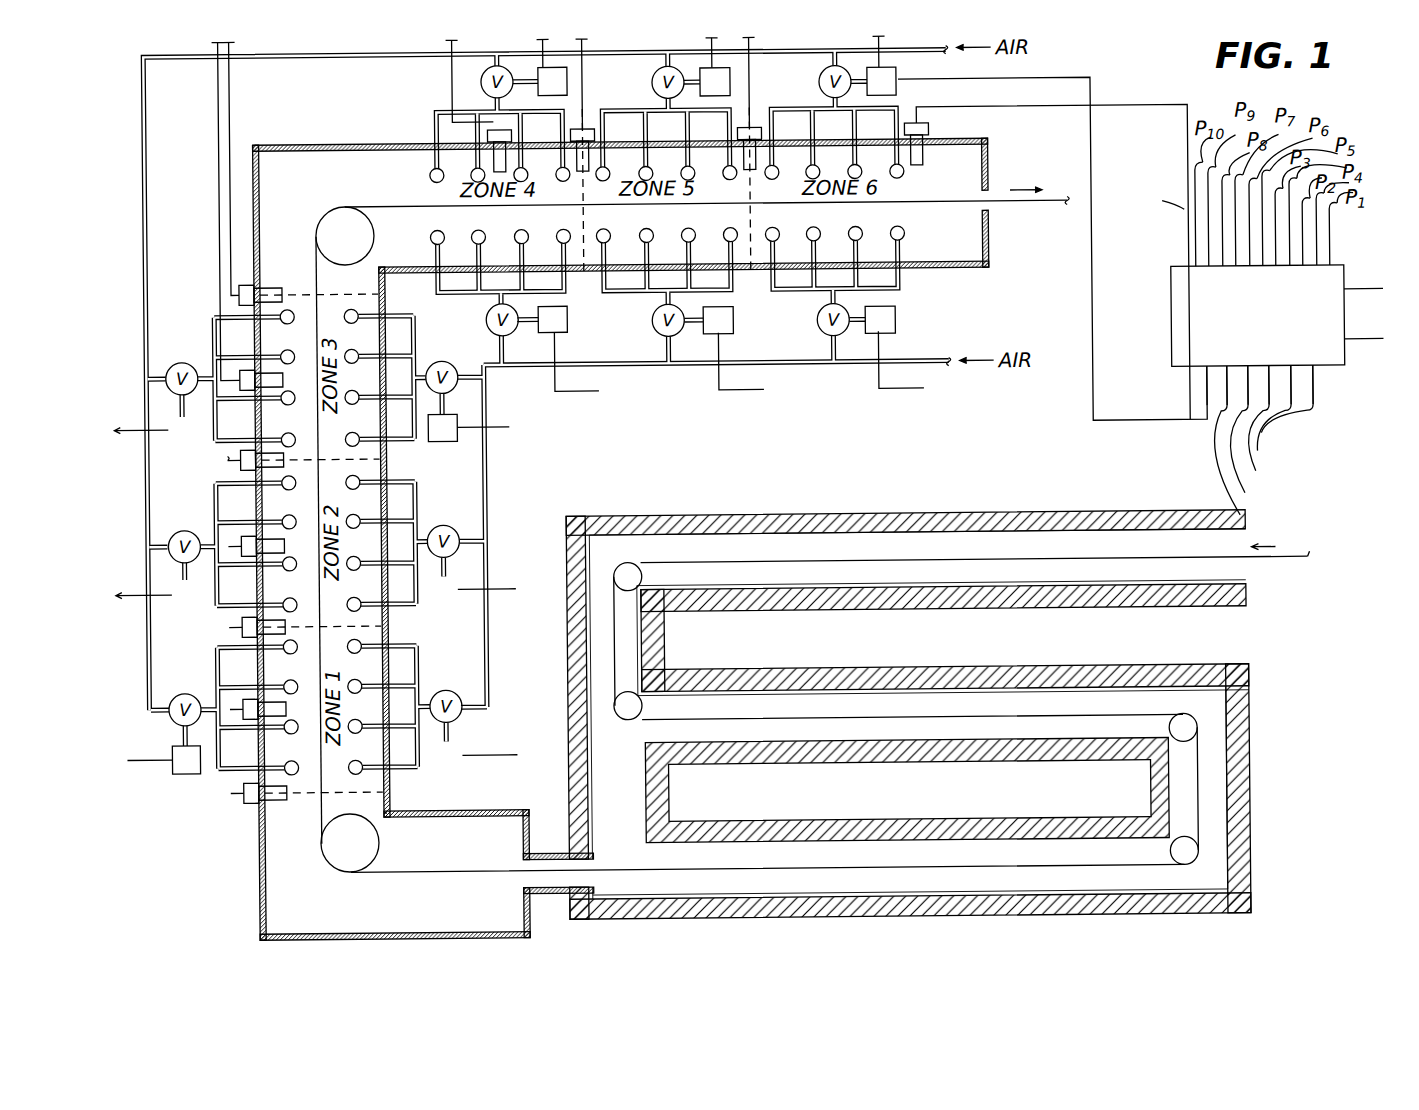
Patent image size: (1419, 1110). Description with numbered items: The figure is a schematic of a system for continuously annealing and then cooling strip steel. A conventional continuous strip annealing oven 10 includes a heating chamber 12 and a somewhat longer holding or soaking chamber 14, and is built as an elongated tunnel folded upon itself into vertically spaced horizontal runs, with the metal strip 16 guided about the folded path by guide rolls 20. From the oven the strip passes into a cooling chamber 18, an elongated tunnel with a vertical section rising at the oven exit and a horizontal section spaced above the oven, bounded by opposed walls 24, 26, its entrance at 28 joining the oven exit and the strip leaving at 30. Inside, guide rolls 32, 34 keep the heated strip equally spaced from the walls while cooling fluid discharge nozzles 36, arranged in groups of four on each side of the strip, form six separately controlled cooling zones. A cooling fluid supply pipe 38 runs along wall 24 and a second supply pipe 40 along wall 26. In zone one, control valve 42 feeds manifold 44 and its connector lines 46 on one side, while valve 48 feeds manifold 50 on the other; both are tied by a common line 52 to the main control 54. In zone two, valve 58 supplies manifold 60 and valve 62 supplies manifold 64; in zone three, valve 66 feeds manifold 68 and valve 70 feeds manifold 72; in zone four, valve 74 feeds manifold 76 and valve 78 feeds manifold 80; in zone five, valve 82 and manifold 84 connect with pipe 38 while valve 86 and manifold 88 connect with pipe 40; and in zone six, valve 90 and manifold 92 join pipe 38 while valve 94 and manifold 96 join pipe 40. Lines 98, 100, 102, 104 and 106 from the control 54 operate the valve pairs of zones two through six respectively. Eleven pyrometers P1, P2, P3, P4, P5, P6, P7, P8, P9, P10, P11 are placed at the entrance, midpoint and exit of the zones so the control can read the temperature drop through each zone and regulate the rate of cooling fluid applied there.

The continuous strip annealing oven 10 is at (900, 515).
The heating chamber 12 is at (1031, 524).
The holding or soaking chamber 14 is at (1095, 685).
The metal strip 16 is at (1272, 562).
The cooling chamber 18 is at (323, 133).
The guide rolls 20 is at (628, 563).
The wall 24 is at (258, 850).
The wall 26 is at (390, 803).
The entrance 28 is at (522, 848).
The belt exit run 30 is at (993, 202).
The guide roll 32 is at (345, 855).
The guide roll 34 is at (338, 214).
The cooling fluid discharge nozzles 36 is at (283, 760).
The cooling fluid supply pipe 38 is at (144, 190).
The second supply pipe 40 is at (714, 368).
The control valve 42 is at (165, 720).
The manifold 44 is at (215, 773).
The connector lines 46 is at (225, 689).
The valve 48 is at (441, 687).
The manifold 50 is at (415, 651).
The common line 52 is at (1338, 409).
The main control 54 is at (1350, 270).
The valve 58 is at (168, 535).
The manifold 60 is at (212, 522).
The valve 62 is at (441, 524).
The manifold 64 is at (415, 506).
The valve 66 is at (167, 366).
The manifold 68 is at (212, 350).
The valve 70 is at (457, 360).
The manifold 72 is at (414, 439).
The valve 74 is at (485, 80).
The manifold 76 is at (440, 110).
The valve 78 is at (488, 318).
The manifold 80 is at (555, 290).
The valve 82 is at (672, 67).
The manifold 84 is at (636, 110).
The valve 86 is at (674, 333).
The manifold 88 is at (657, 304).
The valve 90 is at (825, 82).
The manifold 92 is at (880, 117).
The valve 94 is at (819, 318).
The manifold 96 is at (890, 299).
The line 98 is at (1338, 420).
The line 100 is at (1332, 430).
The line 102 is at (1324, 440).
The line 104 is at (1316, 450).
The line 106 is at (1092, 426).
The pyrometer P1 is at (248, 796).
The pyrometer P2 is at (284, 703).
The pyrometer P3 is at (240, 629).
The pyrometer P4 is at (243, 550).
The pyrometer P5 is at (239, 458).
The pyrometer P6 is at (252, 384).
The pyrometer P7 is at (240, 291).
The pyrometer P8 is at (498, 157).
The pyrometer P9 is at (588, 126).
The pyrometer P10 is at (754, 126).
The pyrometer P11 is at (928, 150).